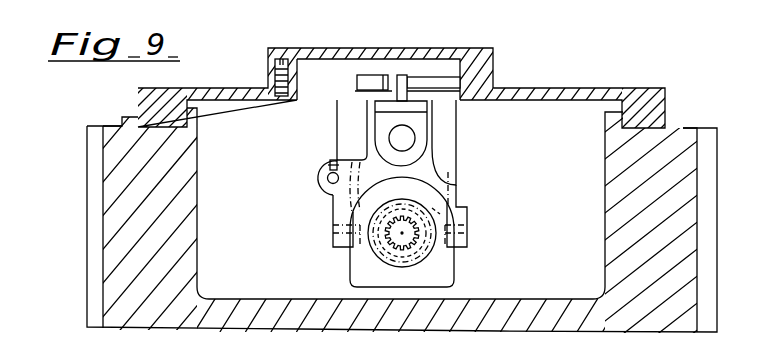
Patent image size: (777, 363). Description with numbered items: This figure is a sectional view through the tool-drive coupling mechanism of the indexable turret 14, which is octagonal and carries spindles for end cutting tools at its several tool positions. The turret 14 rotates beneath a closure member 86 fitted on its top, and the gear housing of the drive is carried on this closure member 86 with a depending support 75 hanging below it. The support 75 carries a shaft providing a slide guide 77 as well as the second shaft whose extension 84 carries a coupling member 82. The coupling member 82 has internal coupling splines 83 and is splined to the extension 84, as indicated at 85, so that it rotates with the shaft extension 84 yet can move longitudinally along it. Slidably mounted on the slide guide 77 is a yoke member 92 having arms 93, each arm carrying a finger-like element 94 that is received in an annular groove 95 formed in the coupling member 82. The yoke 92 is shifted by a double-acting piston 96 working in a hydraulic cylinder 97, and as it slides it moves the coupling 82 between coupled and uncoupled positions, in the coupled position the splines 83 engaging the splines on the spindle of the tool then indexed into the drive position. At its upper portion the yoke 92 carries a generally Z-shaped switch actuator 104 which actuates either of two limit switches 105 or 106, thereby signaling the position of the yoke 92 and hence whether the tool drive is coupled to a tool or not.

The turret 14 is at (178, 180).
The depending support 75 is at (448, 135).
The slide guide 77 is at (390, 138).
The coupling member 82 is at (446, 280).
The internal coupling splines 83 is at (426, 255).
The shaft extension 84 is at (396, 236).
The spline connection 85 is at (395, 253).
The closure member 86 is at (648, 106).
The yoke member 92 is at (450, 178).
The arms 93 is at (334, 221).
The finger-like elements 94 is at (352, 250).
The annular groove 95 is at (432, 208).
The double-acting piston 96 is at (328, 180).
The hydraulic cylinder 97 is at (346, 160).
The switch actuator 104 is at (400, 93).
The limit switch 105 is at (367, 75).
The limit switch 106 is at (437, 80).